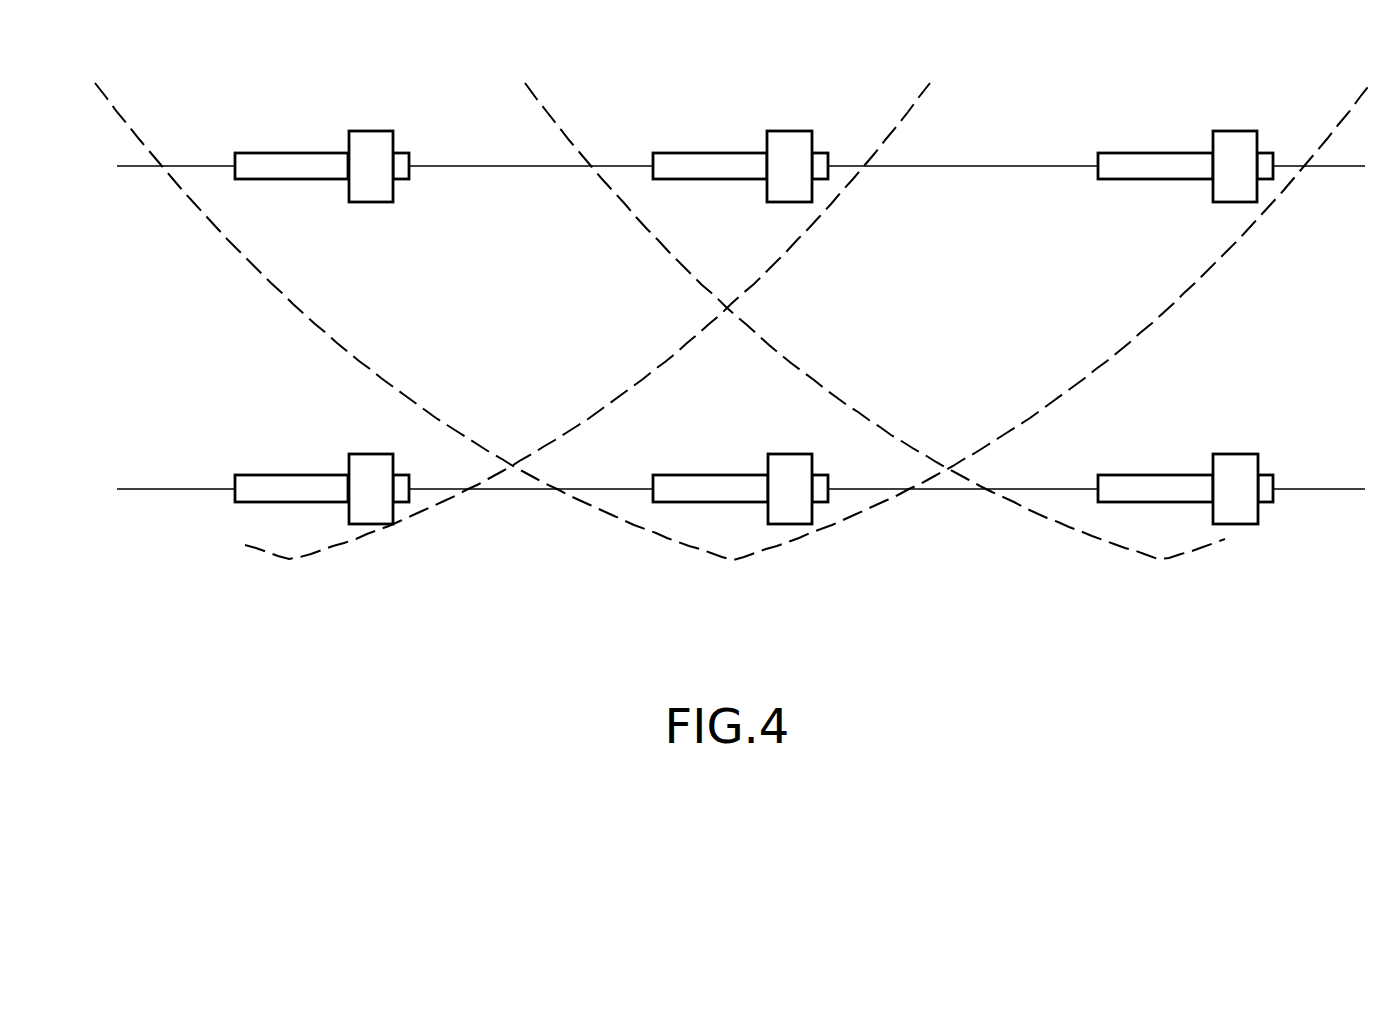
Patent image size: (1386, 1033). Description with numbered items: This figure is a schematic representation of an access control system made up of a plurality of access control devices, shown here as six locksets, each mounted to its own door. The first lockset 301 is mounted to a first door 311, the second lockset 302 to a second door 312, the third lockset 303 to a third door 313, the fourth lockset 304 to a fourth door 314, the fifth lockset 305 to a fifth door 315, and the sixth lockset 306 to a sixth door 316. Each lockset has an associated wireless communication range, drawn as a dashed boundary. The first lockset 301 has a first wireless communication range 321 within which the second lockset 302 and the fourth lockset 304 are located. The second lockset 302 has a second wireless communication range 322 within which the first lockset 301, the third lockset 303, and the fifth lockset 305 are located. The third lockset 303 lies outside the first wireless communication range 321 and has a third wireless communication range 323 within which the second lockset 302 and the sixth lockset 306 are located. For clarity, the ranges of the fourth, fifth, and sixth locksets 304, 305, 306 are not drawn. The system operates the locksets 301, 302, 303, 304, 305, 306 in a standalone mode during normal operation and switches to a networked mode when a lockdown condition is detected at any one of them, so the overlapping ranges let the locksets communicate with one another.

The first lockset 301 is at (367, 130).
The second lockset 302 is at (785, 130).
The third lockset 303 is at (1230, 130).
The fourth lockset 304 is at (367, 453).
The fifth lockset 305 is at (785, 453).
The sixth lockset 306 is at (1230, 453).
The first door 311 is at (277, 152).
The second door 312 is at (695, 152).
The third door 313 is at (1140, 152).
The fourth door 314 is at (277, 475).
The fifth door 315 is at (695, 475).
The sixth door 316 is at (1140, 475).
The first wireless communication range 321 is at (305, 562).
The second wireless communication range 322 is at (733, 562).
The third wireless communication range 323 is at (1167, 562).